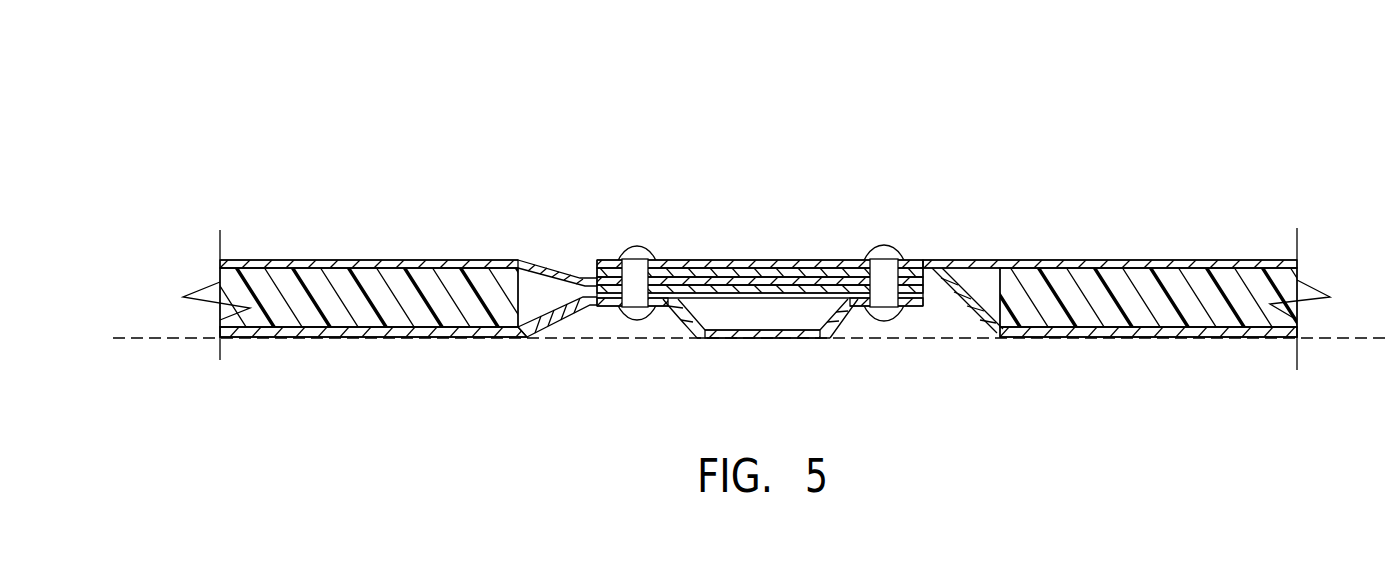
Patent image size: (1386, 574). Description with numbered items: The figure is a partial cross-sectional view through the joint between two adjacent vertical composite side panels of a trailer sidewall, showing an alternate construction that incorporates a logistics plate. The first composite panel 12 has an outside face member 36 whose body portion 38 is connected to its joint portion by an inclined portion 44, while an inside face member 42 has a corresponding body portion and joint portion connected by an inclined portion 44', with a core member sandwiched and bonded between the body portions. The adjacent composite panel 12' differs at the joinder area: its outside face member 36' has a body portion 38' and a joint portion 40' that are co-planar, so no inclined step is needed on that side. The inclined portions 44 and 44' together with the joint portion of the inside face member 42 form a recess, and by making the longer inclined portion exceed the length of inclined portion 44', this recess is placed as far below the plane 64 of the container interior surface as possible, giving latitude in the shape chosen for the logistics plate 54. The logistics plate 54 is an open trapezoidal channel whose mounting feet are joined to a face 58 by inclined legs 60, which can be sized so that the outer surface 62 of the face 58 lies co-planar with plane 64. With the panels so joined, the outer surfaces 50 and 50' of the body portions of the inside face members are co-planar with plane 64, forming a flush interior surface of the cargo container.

The composite panel 12 is at (388, 224).
The adjacent composite panel 12' is at (1279, 236).
The outside face member 36 is at (369, 225).
The outside face member 36' is at (1110, 223).
The body portion 38 is at (369, 252).
The body portion 38' is at (1148, 252).
The joint portion 40' is at (947, 238).
The inside face member 42 is at (272, 337).
The inclined portion 44 is at (557, 224).
The inclined portion 44' is at (557, 345).
The outer surface 50 is at (373, 373).
The outer surface 50' is at (1148, 369).
The logistics plate 54 is at (873, 322).
The face 58 is at (800, 339).
The inclined legs 60 is at (668, 320).
The outer surface 62 is at (742, 339).
The plane of the interior surface 64 is at (1343, 339).